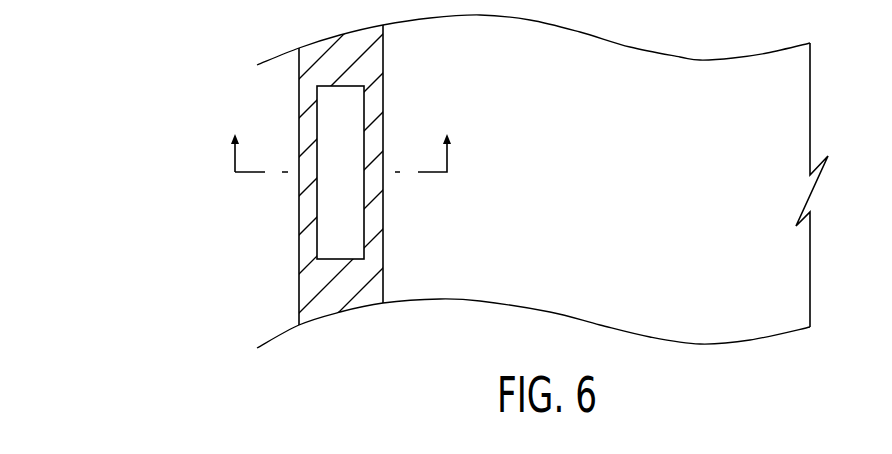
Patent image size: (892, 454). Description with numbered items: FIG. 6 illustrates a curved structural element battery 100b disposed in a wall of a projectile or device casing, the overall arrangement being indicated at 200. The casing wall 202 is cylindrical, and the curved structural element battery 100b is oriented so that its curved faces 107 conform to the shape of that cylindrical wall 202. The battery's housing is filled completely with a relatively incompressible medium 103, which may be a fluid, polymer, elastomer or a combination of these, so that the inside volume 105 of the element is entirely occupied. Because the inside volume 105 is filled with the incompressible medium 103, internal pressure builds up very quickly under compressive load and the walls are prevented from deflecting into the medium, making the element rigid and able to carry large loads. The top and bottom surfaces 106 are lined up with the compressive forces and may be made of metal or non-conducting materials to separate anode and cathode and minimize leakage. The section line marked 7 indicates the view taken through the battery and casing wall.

The sensor assembly / glazing structure 200 is at (252, 101).
The curved structural element battery 100b is at (353, 80).
The incompressible medium 103 is at (348, 105).
The inside volume 105 is at (358, 177).
The curved faces 107 is at (315, 200).
The top and bottom surfaces 106 is at (327, 270).
The casing wall 202 is at (385, 278).
The section line 7- 7 is at (344, 155).